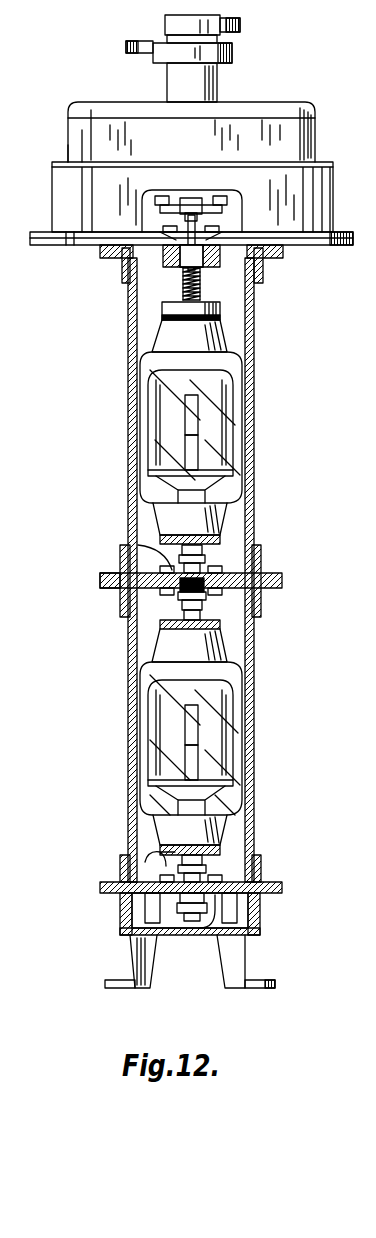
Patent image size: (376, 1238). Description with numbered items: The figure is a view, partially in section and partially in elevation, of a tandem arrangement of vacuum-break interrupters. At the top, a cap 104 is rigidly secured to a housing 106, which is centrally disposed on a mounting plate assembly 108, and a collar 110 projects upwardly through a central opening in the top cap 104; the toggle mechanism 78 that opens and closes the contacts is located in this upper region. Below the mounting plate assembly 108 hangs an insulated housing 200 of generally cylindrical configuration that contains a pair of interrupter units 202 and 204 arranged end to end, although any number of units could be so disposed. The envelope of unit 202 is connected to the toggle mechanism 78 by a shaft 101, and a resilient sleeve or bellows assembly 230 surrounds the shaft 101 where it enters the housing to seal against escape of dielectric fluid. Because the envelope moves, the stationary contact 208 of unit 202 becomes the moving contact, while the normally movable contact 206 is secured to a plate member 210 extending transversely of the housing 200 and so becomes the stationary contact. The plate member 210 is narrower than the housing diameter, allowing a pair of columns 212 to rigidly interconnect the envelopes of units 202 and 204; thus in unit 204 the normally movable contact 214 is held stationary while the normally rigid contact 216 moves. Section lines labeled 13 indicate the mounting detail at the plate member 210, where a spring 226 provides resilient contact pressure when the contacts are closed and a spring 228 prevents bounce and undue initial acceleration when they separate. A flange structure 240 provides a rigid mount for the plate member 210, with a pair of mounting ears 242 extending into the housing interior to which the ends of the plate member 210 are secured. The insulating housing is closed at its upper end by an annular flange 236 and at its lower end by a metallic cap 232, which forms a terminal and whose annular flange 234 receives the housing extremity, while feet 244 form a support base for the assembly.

The toggle mechanism 78 is at (176, 151).
The shaft 101 is at (198, 236).
The cap 104 is at (316, 114).
The housing 106 is at (325, 216).
The mounting plate assembly 108 is at (78, 246).
The collar 110 is at (218, 86).
The section line of FIG. 13 is at (195, 517).
The insulated housing 200 is at (256, 390).
The interrupter unit 202 is at (140, 435).
The interrupter unit 204 is at (140, 740).
The movable contact 206 is at (200, 458).
The stationary contact 208 is at (200, 431).
The plate member 210 is at (210, 576).
The columns 212 is at (202, 614).
The movable contact 214 is at (198, 762).
The rigid contact 216 is at (198, 733).
The spring 226 is at (150, 552).
The spring 228 is at (180, 592).
The bellows assembly 230 is at (183, 292).
The metallic cap 232 is at (120, 915).
The annular flange 234 is at (120, 866).
The annular flange 236 is at (264, 272).
The flange structure 240 is at (120, 571).
The mounting ears 242 is at (130, 592).
The feet 244 is at (128, 990).